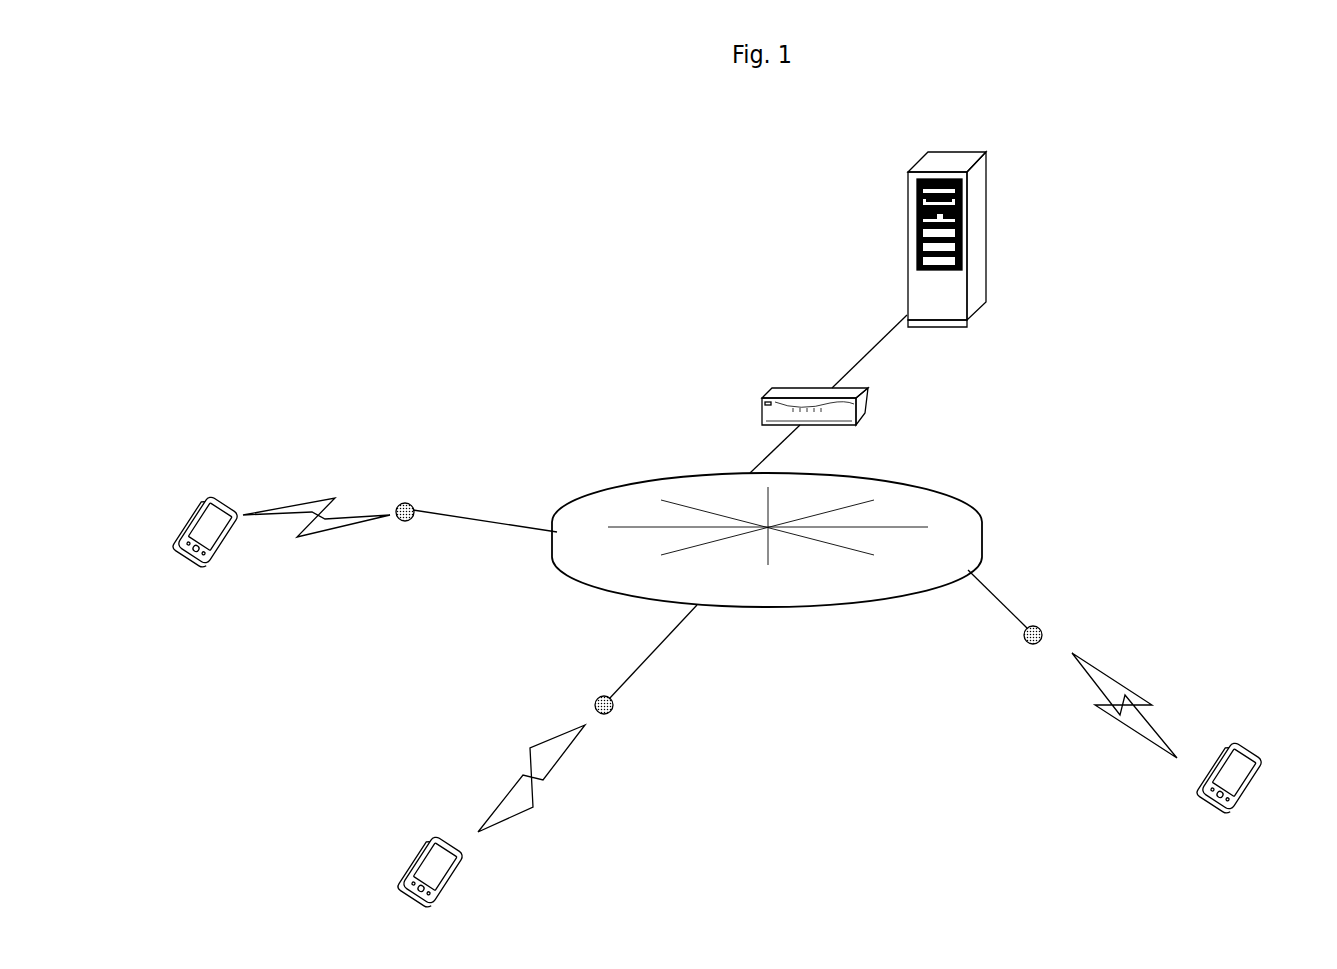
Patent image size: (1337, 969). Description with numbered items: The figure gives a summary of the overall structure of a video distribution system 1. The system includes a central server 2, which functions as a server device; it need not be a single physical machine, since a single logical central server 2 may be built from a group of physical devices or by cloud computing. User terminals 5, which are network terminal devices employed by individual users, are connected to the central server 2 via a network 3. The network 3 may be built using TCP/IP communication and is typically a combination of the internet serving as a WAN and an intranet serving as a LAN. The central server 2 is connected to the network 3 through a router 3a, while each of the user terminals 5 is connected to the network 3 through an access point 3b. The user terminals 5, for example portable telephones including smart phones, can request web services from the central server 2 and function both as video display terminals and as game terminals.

The video distribution system 1 is at (277, 293).
The central server 2 is at (986, 217).
The network 3 is at (625, 430).
The router 3a is at (778, 388).
The access point 3b is at (413, 505).
The user terminal 5 is at (236, 497).